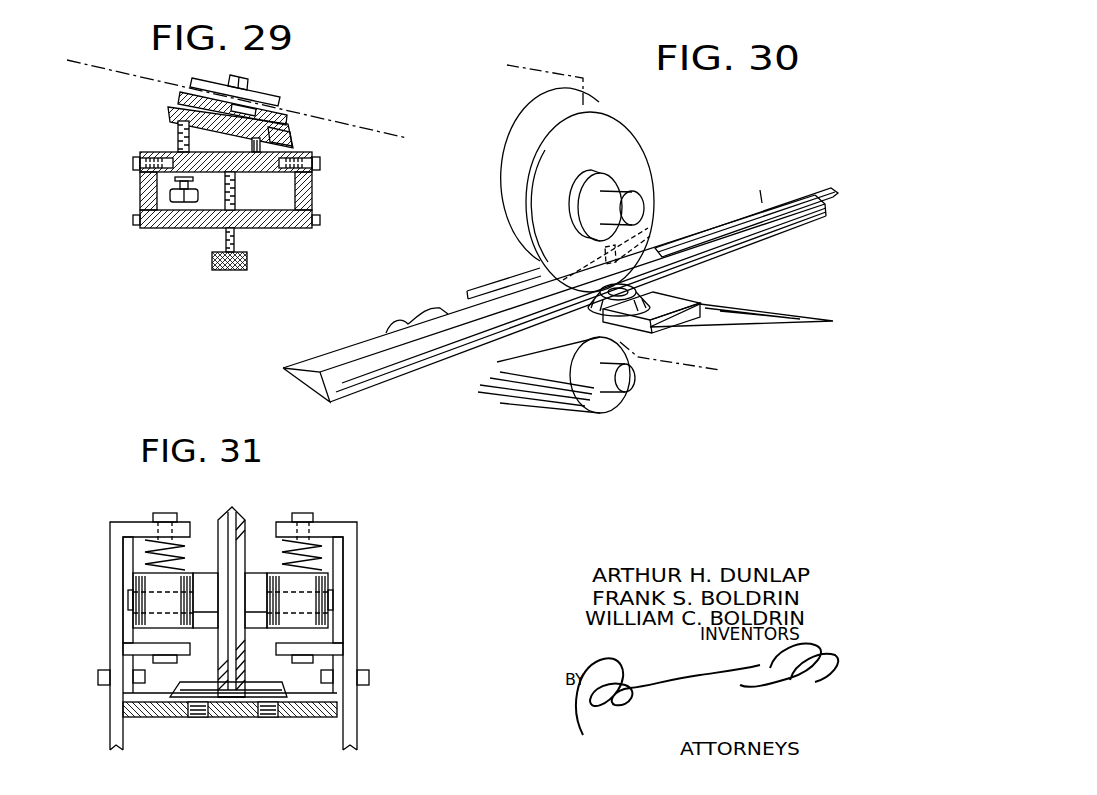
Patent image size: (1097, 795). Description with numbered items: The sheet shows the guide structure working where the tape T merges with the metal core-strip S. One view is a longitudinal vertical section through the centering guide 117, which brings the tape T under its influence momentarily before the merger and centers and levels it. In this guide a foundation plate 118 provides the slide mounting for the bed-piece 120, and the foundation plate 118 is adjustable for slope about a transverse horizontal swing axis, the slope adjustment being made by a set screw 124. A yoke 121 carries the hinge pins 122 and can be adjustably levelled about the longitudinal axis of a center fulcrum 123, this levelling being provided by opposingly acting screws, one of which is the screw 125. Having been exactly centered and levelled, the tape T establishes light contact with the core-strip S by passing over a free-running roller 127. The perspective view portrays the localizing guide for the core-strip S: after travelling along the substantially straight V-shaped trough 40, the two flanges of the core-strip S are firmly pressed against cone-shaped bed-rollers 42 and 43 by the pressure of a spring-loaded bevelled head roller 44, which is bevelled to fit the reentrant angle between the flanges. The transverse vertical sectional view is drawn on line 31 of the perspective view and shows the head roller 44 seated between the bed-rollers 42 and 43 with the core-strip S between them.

In FIG. 29, the centering guide 117 is at (332, 158).
In FIG. 29, the foundation plate 118 is at (168, 114).
In FIG. 29, the bed-piece 120 is at (180, 93).
In FIG. 29, the yoke 121 is at (158, 152).
In FIG. 29, the hinge pins 122 is at (293, 134).
In FIG. 29, the center fulcrum 123 is at (137, 163).
In FIG. 29, the set screw 124 is at (178, 136).
In FIG. 29, the levelling screw 125 is at (237, 243).
In FIG. 30, the free-running roller 127 is at (555, 397).
In FIG. 30, the section line 31- 31 is at (524, 72).
In FIG. 30, the V-shaped trough 40 is at (745, 197).
In FIG. 30, the cone-shaped bed-roller 42 is at (523, 287).
In FIG. 31, the cone-shaped bed-roller 42 is at (187, 692).
In FIG. 30, the cone-shaped bed-roller 43 is at (650, 292).
In FIG. 31, the cone-shaped bed-roller 43 is at (277, 697).
In FIG. 30, the bevelled head roller 44 is at (637, 152).
In FIG. 31, the bevelled head roller 44 is at (237, 518).
In FIG. 30, the core-strip S is at (803, 184).
In FIG. 31, the core-strip S is at (230, 700).
In FIG. 29, the tape T is at (346, 116).
In FIG. 30, the tape T is at (796, 329).